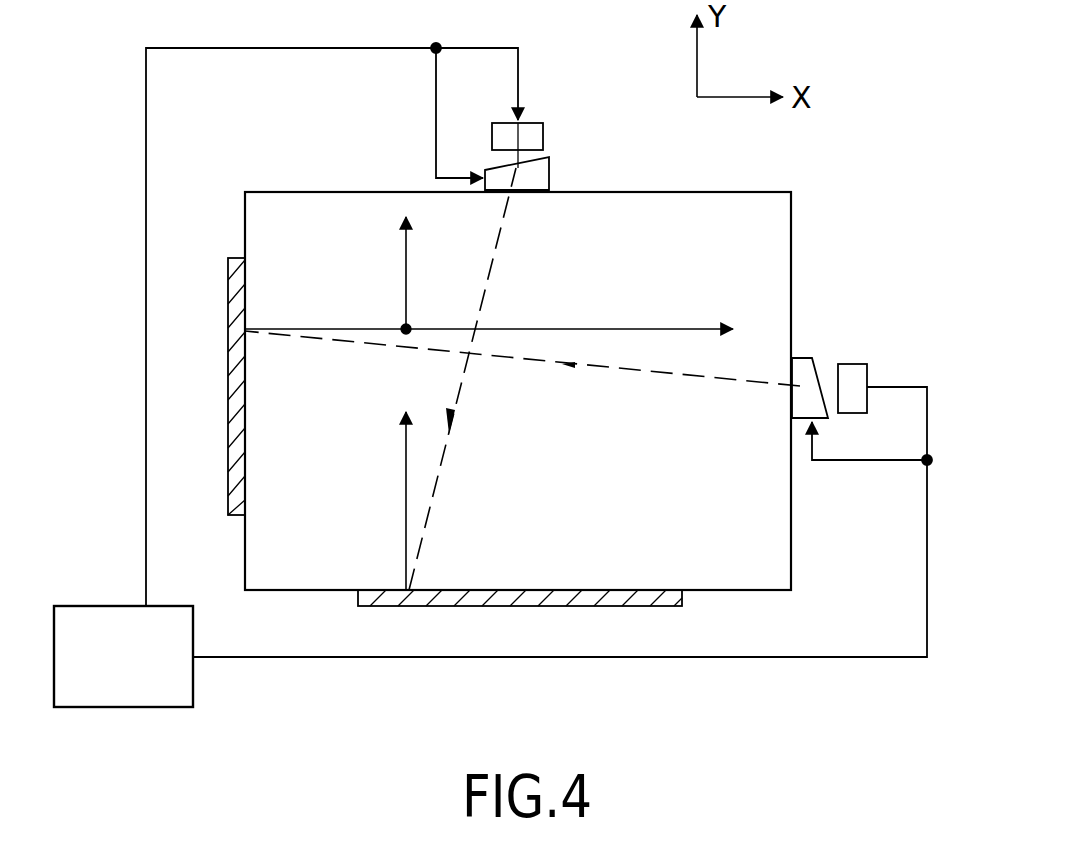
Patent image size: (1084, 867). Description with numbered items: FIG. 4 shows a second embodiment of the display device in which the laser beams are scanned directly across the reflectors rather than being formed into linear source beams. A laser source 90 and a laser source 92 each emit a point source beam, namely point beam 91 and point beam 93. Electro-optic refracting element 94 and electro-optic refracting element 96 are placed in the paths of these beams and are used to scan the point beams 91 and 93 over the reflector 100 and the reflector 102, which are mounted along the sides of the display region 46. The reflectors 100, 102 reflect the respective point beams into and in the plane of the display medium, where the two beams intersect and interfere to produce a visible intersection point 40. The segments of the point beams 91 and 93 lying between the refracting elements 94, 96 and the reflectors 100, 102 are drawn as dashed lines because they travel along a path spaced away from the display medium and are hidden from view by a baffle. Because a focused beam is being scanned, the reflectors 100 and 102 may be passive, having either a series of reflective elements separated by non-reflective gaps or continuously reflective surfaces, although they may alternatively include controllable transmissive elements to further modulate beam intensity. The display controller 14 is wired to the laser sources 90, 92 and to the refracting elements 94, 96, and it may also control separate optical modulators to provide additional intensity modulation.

The display controller 14 is at (493, 375).
The visible intersection point 40 is at (406, 329).
The enclosure 46 is at (716, 192).
The laser source 90 is at (530, 123).
The point source beam 91 is at (407, 497).
The laser source 92 is at (855, 366).
The point source beam 93 is at (605, 328).
The electro-optic refracting element 94 is at (550, 173).
The electro-optic refracting element 96 is at (800, 358).
The reflector 100 is at (228, 502).
The reflector 102 is at (632, 606).